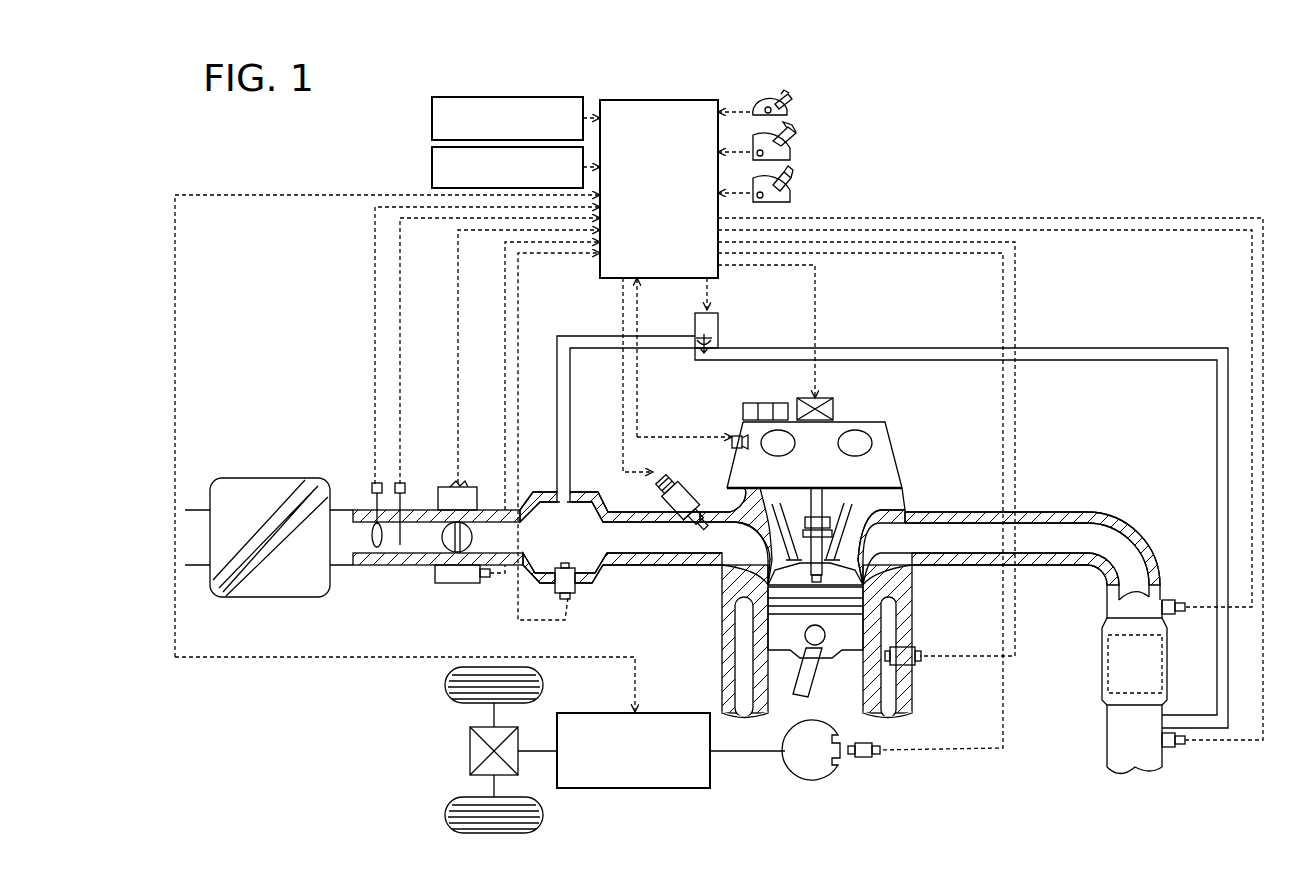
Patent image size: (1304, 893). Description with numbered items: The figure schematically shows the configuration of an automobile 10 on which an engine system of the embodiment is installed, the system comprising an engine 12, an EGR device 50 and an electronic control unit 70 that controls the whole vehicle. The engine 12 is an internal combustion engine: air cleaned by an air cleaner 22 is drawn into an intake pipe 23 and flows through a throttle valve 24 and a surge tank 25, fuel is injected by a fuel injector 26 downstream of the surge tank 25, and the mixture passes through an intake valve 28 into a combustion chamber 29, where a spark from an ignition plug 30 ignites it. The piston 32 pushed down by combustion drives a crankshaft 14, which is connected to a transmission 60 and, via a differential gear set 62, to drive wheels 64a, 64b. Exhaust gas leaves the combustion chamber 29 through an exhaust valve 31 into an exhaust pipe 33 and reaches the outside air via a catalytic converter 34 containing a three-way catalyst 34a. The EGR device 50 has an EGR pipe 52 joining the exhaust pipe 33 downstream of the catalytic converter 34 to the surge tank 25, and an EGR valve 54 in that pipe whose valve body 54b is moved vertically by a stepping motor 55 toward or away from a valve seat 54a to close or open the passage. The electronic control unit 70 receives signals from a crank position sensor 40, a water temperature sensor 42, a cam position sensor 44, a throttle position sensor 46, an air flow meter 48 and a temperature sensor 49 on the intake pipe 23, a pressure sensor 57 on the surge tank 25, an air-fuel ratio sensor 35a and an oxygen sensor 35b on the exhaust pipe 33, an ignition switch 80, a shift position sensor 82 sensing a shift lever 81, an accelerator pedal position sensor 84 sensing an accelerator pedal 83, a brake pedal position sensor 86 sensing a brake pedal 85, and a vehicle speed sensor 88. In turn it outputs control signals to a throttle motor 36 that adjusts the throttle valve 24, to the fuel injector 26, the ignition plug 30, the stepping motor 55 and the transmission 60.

The automobile 10 is at (1005, 125).
The engine 12 is at (918, 312).
The crankshaft 14 is at (815, 780).
The air cleaner 22 is at (268, 478).
The intake pipe 23 is at (390, 568).
The throttle valve 24 is at (442, 548).
The surge tank 25 is at (548, 490).
The fuel injector 26 is at (665, 497).
The intake valve 28 is at (745, 566).
The combustion chamber 29 is at (785, 585).
The ignition plug 30 is at (815, 548).
The exhaust valve 31 is at (840, 576).
The piston 32 is at (782, 647).
The exhaust pipe 33 is at (1043, 565).
The catalytic converter 34 is at (1102, 680).
The catalyst 34a is at (1105, 652).
The air-fuel ratio sensor 35a is at (1172, 600).
The oxygen sensor 35b is at (1170, 750).
The throttle motor 36 is at (470, 485).
The crank position sensor 40 is at (862, 760).
The water temperature sensor 42 is at (917, 667).
The cam position sensor 44 is at (730, 442).
The throttle position sensor 46 is at (455, 585).
The air flow meter 48 is at (374, 484).
The temperature sensor 49 is at (403, 484).
The EGR device 50 is at (1073, 418).
The EGR pipe 52 is at (1077, 348).
The EGR valve 54 is at (712, 355).
The valve seat 54a is at (700, 354).
The valve body 54b is at (703, 340).
The stepping motor 55 is at (718, 322).
The pressure sensor 57 is at (568, 600).
The transmission 60 is at (652, 712).
The differential gear set 62 is at (470, 748).
The drive wheel 64a is at (445, 685).
The drive wheel 64b is at (445, 813).
The electronic control unit 70 is at (660, 100).
The ignition switch 80 is at (432, 115).
The shift lever 81 is at (790, 100).
The shift position sensor 82 is at (790, 113).
The accelerator pedal 83 is at (792, 146).
The accelerator pedal position sensor 84 is at (792, 157).
The brake pedal 85 is at (792, 190).
The brake pedal position sensor 86 is at (792, 199).
The vehicle speed sensor 88 is at (432, 160).